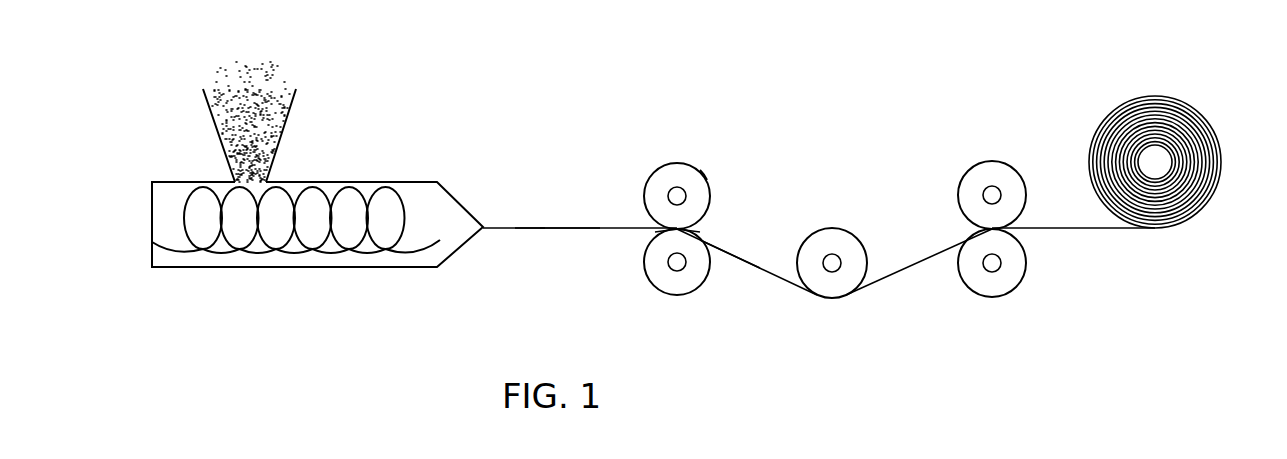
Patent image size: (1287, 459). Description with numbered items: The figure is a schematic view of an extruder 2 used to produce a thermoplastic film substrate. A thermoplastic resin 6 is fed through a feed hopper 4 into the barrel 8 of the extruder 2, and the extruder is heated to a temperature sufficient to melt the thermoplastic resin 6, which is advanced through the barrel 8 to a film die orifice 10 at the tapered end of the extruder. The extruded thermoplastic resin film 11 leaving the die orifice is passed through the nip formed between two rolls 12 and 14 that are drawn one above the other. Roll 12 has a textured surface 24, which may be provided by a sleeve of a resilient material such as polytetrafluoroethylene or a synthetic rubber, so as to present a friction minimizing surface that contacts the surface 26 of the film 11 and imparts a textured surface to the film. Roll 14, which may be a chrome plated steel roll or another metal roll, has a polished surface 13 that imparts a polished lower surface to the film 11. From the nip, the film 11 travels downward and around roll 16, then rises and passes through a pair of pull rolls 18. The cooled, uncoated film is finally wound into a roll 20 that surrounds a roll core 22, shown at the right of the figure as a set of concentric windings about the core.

The extruder 2 is at (235, 278).
The feed hopper 4 is at (277, 152).
The thermoplastic resin 6 is at (285, 75).
The barrel 8 is at (300, 268).
The film die orifice 10 is at (498, 226).
The extruded thermoplastic resin film 11 is at (530, 231).
The roll 12 is at (677, 146).
The polished surface 13 is at (675, 298).
The roll 14 is at (653, 295).
The roll 16 is at (849, 223).
The pull rolls 18 is at (990, 153).
The roll 20 is at (1179, 92).
The roll core 22 is at (1157, 163).
The textured surface 24 is at (708, 177).
The surface 26 is at (553, 226).